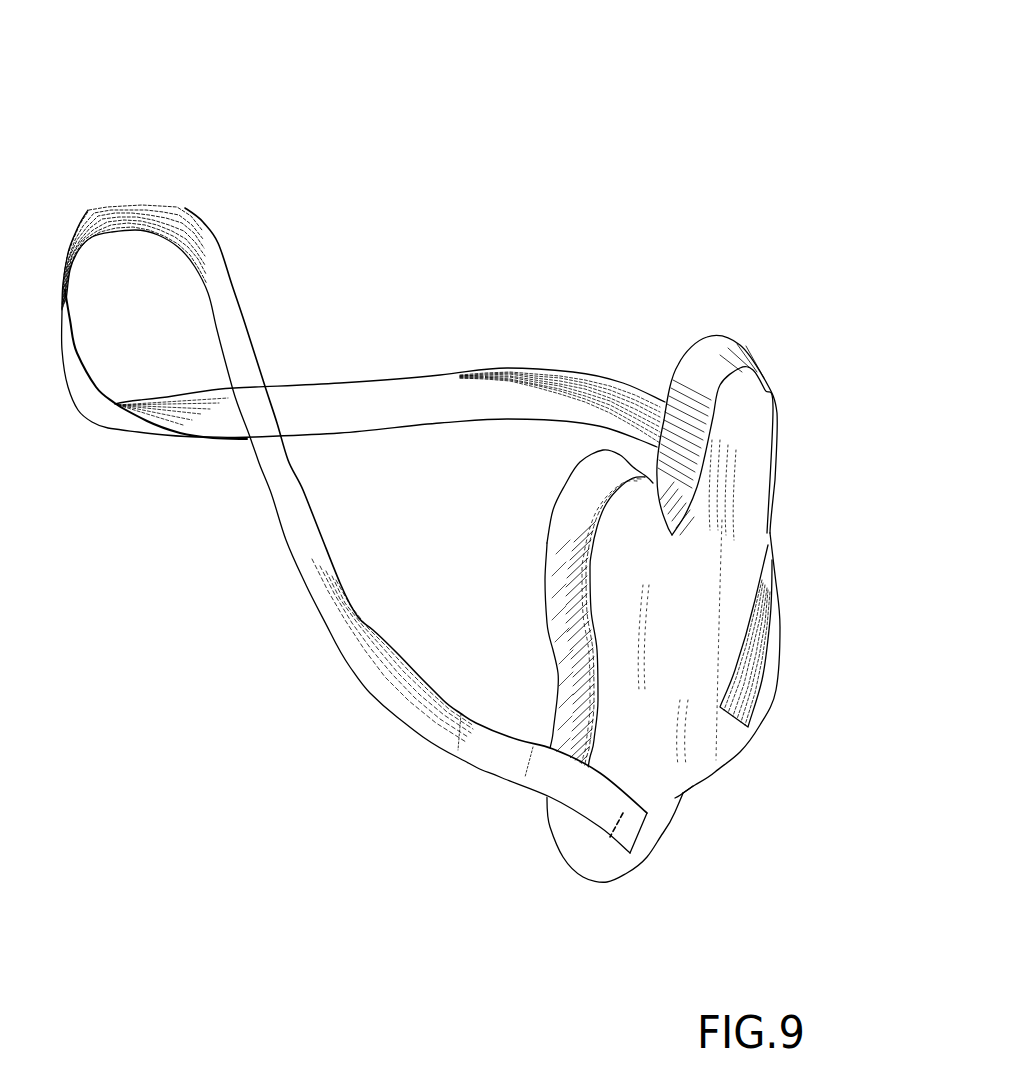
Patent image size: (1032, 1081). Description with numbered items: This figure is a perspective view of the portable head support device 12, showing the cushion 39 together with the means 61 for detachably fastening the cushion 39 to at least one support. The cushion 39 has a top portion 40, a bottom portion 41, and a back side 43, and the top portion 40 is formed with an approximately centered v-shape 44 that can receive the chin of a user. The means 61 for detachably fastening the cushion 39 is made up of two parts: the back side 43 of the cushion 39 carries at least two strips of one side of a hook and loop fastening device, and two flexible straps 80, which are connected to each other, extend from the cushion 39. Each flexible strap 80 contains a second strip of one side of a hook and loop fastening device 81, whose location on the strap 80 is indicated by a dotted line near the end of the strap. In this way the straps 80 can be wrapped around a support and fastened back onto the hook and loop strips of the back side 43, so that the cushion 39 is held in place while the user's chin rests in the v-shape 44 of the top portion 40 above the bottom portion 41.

The portable head support device 12 is at (680, 60).
The cushion 39 is at (773, 323).
The top portion 40 is at (713, 415).
The bottom portion 41 is at (683, 797).
The back side 43 is at (620, 537).
The v-shape 44 is at (677, 502).
The means for detachably fastening the cushion 61 is at (65, 292).
The flexible strap 80 is at (462, 528).
The second strip of one side of a hook and loop fastening device 81 is at (610, 840).